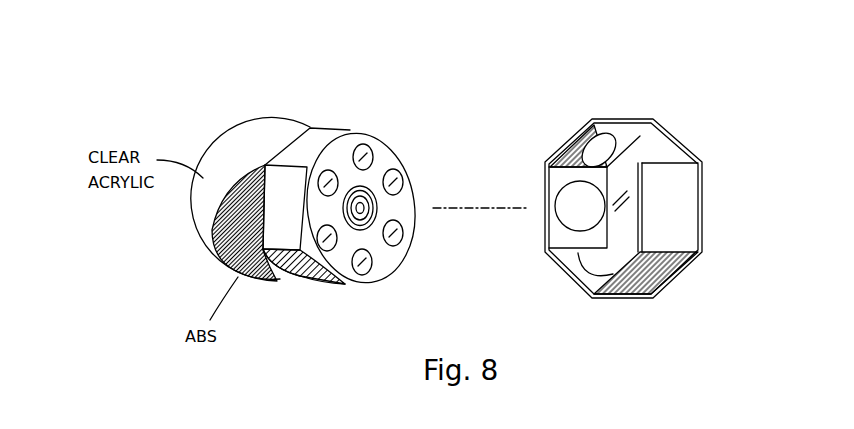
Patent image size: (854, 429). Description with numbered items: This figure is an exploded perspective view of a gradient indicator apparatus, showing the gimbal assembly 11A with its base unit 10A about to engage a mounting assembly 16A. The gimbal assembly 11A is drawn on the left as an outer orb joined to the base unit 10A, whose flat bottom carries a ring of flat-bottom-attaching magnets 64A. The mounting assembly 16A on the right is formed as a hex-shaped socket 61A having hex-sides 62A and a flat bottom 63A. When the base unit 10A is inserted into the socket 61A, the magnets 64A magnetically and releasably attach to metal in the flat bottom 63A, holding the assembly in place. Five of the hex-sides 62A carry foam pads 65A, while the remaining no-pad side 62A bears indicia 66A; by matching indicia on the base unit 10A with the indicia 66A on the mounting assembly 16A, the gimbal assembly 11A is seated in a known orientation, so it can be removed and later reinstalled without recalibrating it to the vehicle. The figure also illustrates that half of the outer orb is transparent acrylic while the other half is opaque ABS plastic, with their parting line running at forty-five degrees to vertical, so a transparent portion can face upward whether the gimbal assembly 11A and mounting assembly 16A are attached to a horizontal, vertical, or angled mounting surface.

The base unit 10A is at (317, 132).
The gimbal assembly 11A is at (225, 132).
The mounting assembly 16A is at (722, 153).
The hex-shaped socket 61A is at (550, 258).
The hex-sides 62A is at (653, 137).
The flat bottom 63A is at (620, 177).
The magnets 64A is at (402, 170).
The foam pads 65A is at (580, 205).
The indicia 66A is at (687, 202).